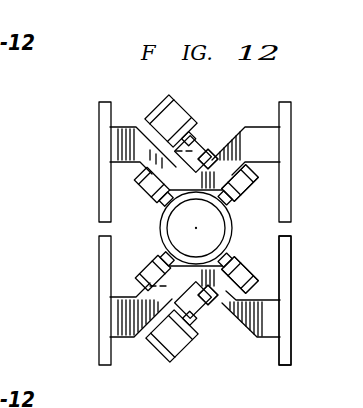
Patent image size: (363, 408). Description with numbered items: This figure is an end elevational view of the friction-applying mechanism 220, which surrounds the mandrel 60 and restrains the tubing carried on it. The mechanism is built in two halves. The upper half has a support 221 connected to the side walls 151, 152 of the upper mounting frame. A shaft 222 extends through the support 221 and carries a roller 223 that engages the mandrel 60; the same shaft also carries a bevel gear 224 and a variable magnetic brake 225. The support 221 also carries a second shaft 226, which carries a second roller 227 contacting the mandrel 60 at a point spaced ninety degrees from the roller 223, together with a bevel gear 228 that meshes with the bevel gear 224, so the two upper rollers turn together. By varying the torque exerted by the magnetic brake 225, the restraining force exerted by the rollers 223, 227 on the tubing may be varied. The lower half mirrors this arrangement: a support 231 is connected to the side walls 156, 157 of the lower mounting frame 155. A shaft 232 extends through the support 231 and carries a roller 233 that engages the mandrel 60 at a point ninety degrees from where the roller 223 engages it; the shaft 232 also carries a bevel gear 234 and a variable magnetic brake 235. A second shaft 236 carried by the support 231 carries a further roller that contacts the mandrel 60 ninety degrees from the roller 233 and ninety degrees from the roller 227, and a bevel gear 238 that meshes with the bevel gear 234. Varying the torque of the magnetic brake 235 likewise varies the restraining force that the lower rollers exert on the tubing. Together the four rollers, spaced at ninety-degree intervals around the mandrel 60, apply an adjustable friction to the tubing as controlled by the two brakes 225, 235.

The friction-applying mechanism 220 is at (290, 84).
The side wall 151 is at (100, 106).
The side wall 152 is at (292, 110).
The lower mounting frame 155 is at (278, 348).
The side wall 156 is at (100, 248).
The side wall 157 is at (292, 250).
The mandrel 60 is at (166, 218).
The support 221 is at (250, 140).
The shaft 222 is at (198, 146).
The roller 223 is at (254, 173).
The bevel gear 224 is at (218, 160).
The variable magnetic brake 225 is at (160, 100).
The second shaft 226 is at (176, 151).
The second roller 227 is at (136, 172).
The bevel gear 228 is at (182, 147).
The support 231 is at (262, 318).
The shaft 232 is at (208, 312).
The roller 233 is at (250, 270).
The bevel gear 234 is at (226, 300).
The variable magnetic brake 235 is at (164, 352).
The second shaft 236 is at (150, 286).
The bevel gear 238 is at (182, 300).